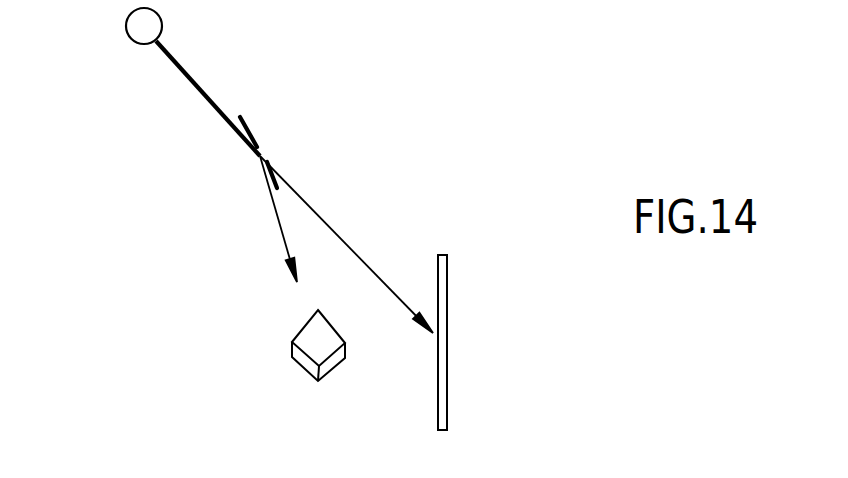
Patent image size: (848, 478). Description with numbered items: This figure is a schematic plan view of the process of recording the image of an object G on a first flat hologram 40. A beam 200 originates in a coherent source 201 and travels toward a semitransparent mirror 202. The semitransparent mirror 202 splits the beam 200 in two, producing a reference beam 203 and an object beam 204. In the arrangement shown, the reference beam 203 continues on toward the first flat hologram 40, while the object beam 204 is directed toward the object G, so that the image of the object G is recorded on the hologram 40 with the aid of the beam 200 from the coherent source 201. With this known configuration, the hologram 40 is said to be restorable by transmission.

The coherent source 201 is at (126, 23).
The beam 200 is at (193, 82).
The semitransparent mirror 202 is at (256, 133).
The reference beam 203 is at (332, 227).
The object beam 204 is at (278, 222).
The object G is at (317, 333).
The first flat hologram 40 is at (447, 320).